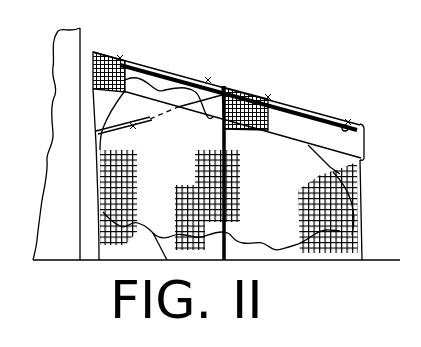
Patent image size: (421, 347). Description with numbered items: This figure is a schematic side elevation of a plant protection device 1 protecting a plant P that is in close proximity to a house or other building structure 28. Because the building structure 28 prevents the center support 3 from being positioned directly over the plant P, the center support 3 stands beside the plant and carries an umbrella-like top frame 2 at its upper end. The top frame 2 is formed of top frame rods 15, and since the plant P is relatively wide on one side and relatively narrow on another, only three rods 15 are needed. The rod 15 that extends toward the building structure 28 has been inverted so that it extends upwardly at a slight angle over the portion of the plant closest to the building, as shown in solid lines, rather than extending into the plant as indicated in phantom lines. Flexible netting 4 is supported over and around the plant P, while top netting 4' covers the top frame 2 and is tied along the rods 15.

The plant protection device 1 is at (331, 100).
The top frame 2 is at (218, 64).
The center support 3 is at (214, 138).
The flexible netting 4 is at (345, 202).
The top netting 4' is at (382, 124).
The top frame rods 15 is at (150, 73).
The building structure 28 is at (68, 52).
The plant P is at (284, 262).